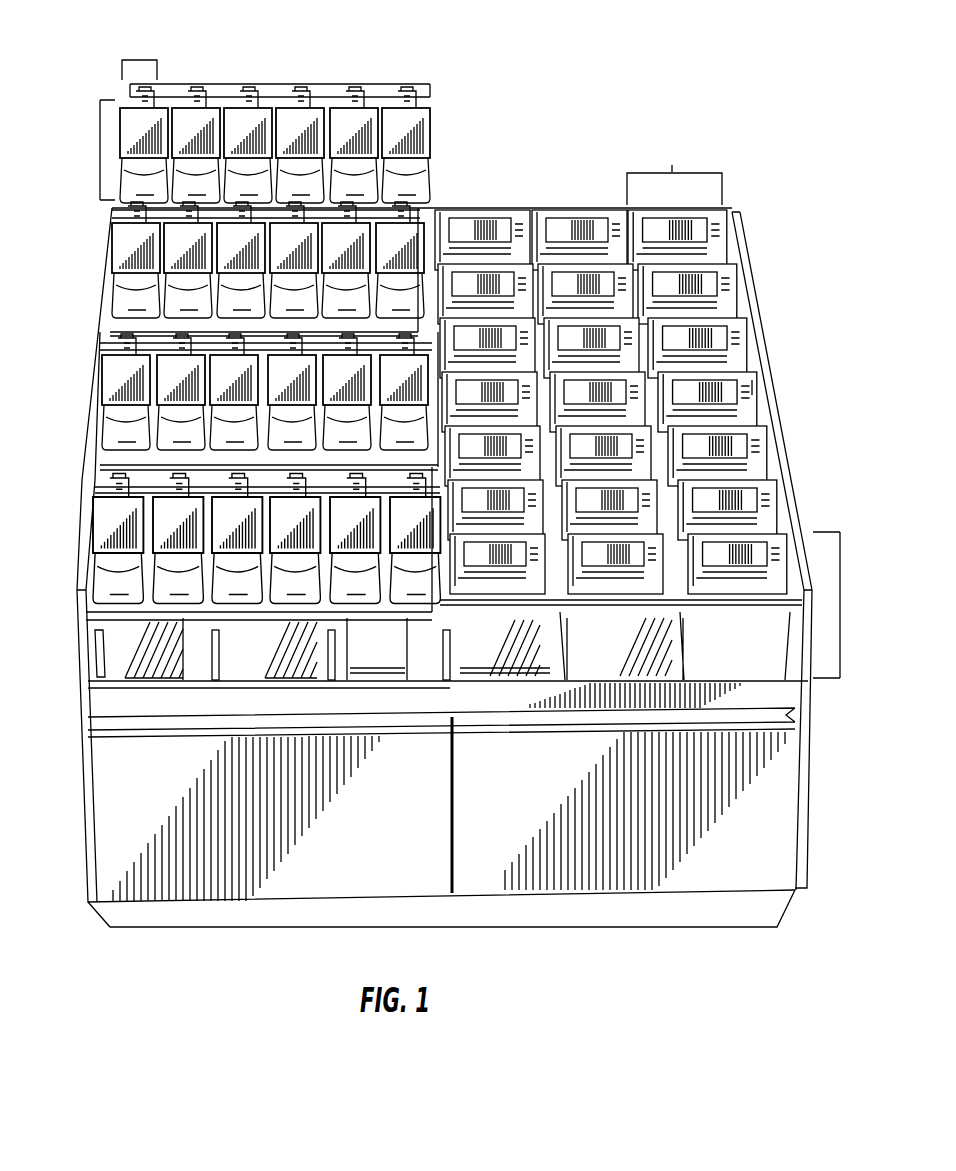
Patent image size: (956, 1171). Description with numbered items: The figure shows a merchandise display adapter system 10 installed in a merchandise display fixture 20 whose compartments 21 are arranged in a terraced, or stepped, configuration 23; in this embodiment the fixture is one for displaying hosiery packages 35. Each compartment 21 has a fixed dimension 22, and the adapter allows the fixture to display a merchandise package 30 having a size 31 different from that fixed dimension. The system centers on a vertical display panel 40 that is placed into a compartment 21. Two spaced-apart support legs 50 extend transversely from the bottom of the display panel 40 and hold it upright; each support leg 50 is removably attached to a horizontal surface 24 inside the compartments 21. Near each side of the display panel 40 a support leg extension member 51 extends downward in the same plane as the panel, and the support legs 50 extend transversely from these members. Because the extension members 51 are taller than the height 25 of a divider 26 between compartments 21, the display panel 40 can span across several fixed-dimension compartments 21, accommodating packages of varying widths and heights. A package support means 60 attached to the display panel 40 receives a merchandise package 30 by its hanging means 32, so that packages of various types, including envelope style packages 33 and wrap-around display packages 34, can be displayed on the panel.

The display adapter system 10 is at (480, 154).
The merchandise display fixture 20 is at (612, 862).
The compartments 21 is at (497, 677).
The fixed dimension 22 is at (672, 172).
The terraced configuration 23 is at (763, 268).
The horizontal surface 24 is at (118, 670).
The height of divider 25 is at (205, 655).
The divider 26 is at (212, 655).
The merchandise package 30 is at (396, 125).
The size 31 is at (100, 125).
The hanging means 32 is at (110, 492).
The envelope style packages 33 is at (753, 390).
The wrap-around display packages 34 is at (118, 248).
The hosiery packages 35 is at (118, 380).
The display panel 40 is at (293, 583).
The support legs 50 is at (393, 655).
The support leg extension members 51 is at (373, 653).
The package support means 60 is at (77, 485).